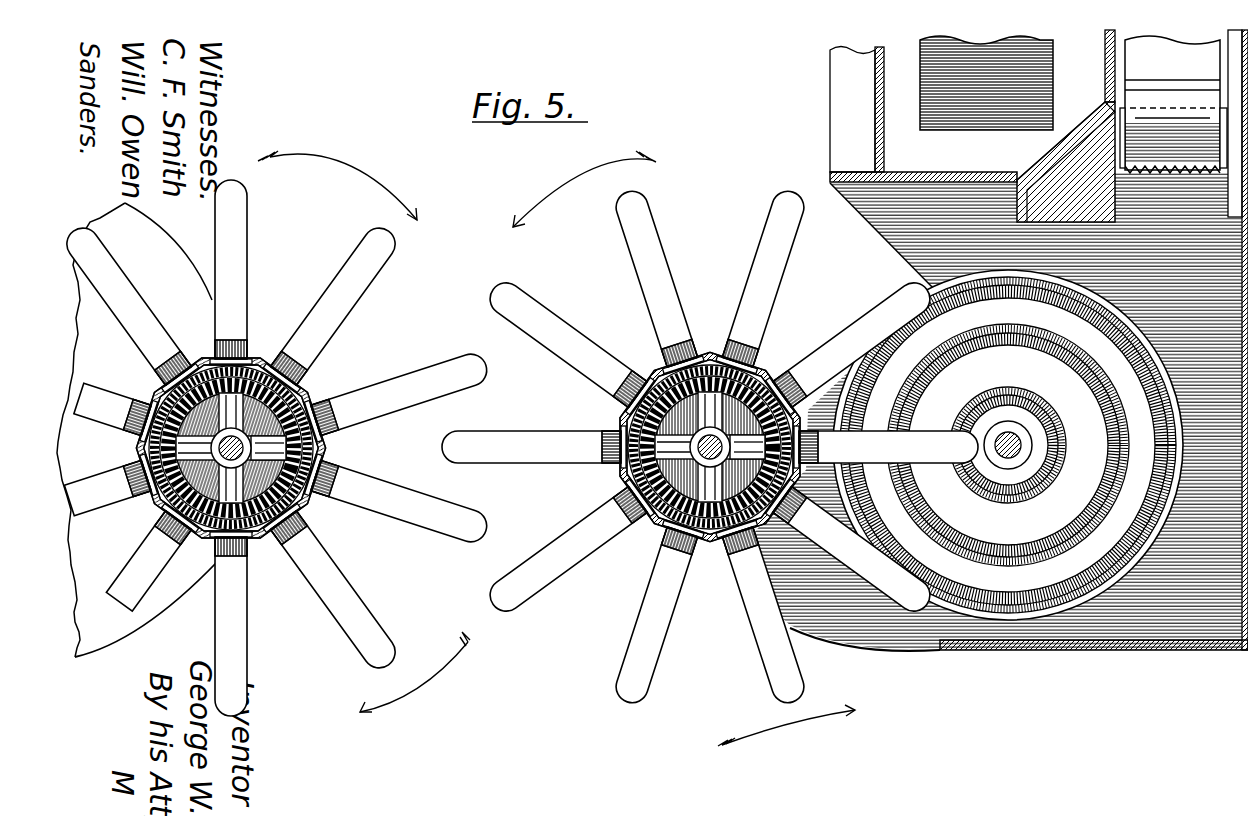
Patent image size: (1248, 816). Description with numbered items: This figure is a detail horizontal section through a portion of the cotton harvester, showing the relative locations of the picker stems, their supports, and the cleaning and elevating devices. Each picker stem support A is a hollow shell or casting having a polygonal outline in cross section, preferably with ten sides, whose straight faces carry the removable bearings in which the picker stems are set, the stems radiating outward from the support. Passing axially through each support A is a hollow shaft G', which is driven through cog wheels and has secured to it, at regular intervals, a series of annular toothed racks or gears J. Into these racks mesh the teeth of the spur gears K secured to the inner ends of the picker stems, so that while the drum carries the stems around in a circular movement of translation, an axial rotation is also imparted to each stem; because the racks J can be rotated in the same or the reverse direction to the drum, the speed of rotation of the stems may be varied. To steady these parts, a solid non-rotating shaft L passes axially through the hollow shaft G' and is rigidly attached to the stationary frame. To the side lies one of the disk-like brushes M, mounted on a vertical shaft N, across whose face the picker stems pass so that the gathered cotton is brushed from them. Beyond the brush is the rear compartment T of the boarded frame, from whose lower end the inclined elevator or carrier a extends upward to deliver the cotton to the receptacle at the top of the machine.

The picker stem support A is at (310, 398).
The annular toothed rack J is at (622, 470).
The spur gear K is at (218, 548).
The non-rotating shaft L is at (470, 447).
The hollow shaft G' is at (508, 447).
The rear compartment T is at (963, 207).
The block o is at (998, 83).
The elevator a is at (1173, 104).
The vertical shaft N is at (991, 466).
The disk-like brush M is at (1008, 458).